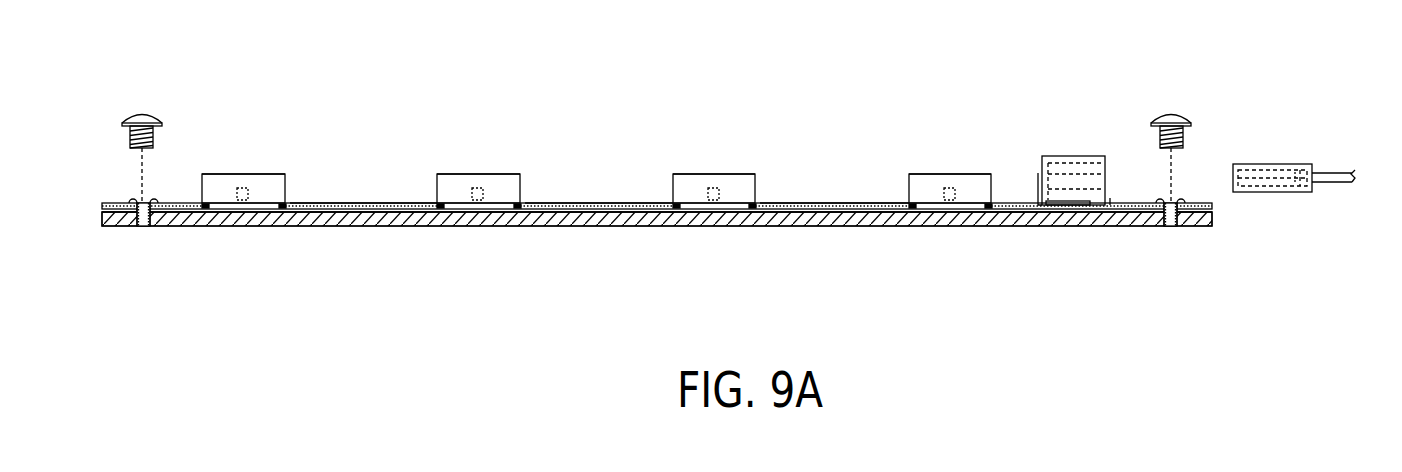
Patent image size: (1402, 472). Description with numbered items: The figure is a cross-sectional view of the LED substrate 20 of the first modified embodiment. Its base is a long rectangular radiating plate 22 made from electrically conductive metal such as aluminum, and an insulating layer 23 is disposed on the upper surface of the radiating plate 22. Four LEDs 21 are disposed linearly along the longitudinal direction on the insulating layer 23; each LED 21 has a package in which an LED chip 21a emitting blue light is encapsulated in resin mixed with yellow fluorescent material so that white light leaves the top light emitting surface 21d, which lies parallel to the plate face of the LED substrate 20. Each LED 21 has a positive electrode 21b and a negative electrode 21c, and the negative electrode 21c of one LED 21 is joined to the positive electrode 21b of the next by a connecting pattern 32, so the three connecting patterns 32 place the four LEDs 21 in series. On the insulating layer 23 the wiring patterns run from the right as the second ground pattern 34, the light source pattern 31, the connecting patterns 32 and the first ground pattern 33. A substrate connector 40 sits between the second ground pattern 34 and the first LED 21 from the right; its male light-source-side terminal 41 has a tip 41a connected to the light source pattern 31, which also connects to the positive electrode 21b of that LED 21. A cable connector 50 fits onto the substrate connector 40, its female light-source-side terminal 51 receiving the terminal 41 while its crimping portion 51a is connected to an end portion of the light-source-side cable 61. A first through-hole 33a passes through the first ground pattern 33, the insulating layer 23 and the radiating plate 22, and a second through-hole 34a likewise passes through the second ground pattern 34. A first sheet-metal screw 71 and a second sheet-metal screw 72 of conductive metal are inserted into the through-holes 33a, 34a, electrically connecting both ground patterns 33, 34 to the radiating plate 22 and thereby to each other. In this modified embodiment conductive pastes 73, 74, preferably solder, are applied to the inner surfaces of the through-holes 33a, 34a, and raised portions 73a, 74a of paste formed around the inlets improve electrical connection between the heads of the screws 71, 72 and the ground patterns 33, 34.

The LED substrate 20 is at (569, 136).
The LED 21 is at (242, 178).
The LED chip 21a is at (243, 192).
The positive electrode 21b is at (278, 206).
The negative electrode 21c is at (208, 206).
The light emitting surface 21d is at (218, 174).
The radiating plate 22 is at (805, 224).
The insulating layer 23 is at (853, 210).
The light source pattern 31 is at (1008, 203).
The connecting pattern 32 is at (370, 203).
The first ground pattern 33 is at (127, 203).
The first through-hole 33a is at (143, 227).
The second ground pattern 34 is at (1198, 202).
The second through-hole 34a is at (1170, 227).
The substrate connector 40 is at (1060, 157).
The light-source-side terminal 41 is at (1072, 170).
The tip of the light-source-side terminal 41a is at (1036, 190).
The cable connector 50 is at (1267, 164).
The light-source-side terminal 51 is at (1272, 175).
The crimping portion 51a is at (1300, 187).
The light-source-side cable 61 is at (1338, 183).
The first sheet-metal screw 71 is at (146, 112).
The second sheet-metal screw 72 is at (1172, 116).
The conductive paste 73 is at (152, 202).
The raised portion 73a is at (131, 201).
The conductive paste 74 is at (1161, 202).
The raised portion 74a is at (1179, 200).